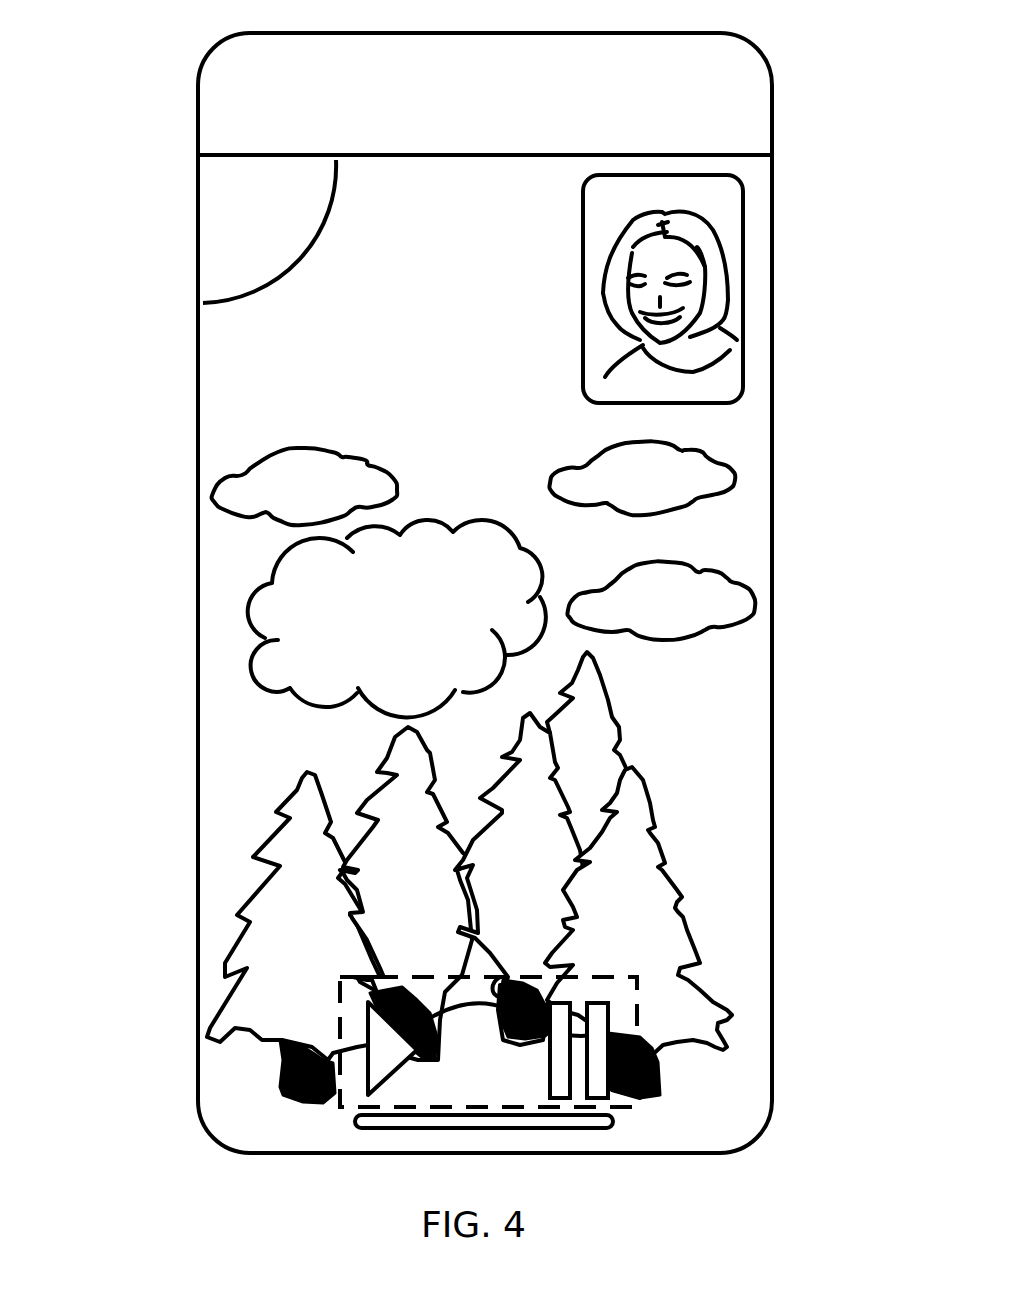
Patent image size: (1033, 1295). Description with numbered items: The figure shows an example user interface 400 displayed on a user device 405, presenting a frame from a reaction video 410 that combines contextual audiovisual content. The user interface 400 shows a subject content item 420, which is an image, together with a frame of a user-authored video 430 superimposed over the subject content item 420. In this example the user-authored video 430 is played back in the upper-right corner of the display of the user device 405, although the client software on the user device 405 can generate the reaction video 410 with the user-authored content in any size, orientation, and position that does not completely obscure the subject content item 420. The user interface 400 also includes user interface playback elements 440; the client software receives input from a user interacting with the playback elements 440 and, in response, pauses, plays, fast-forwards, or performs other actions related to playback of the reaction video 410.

The user interface 400 is at (128, 88).
The user device 405 is at (779, 90).
The reaction video 410 is at (196, 603).
The subject content item 420 is at (706, 698).
The user-authored video 430 is at (752, 313).
The user interface playback elements 440 is at (644, 1109).